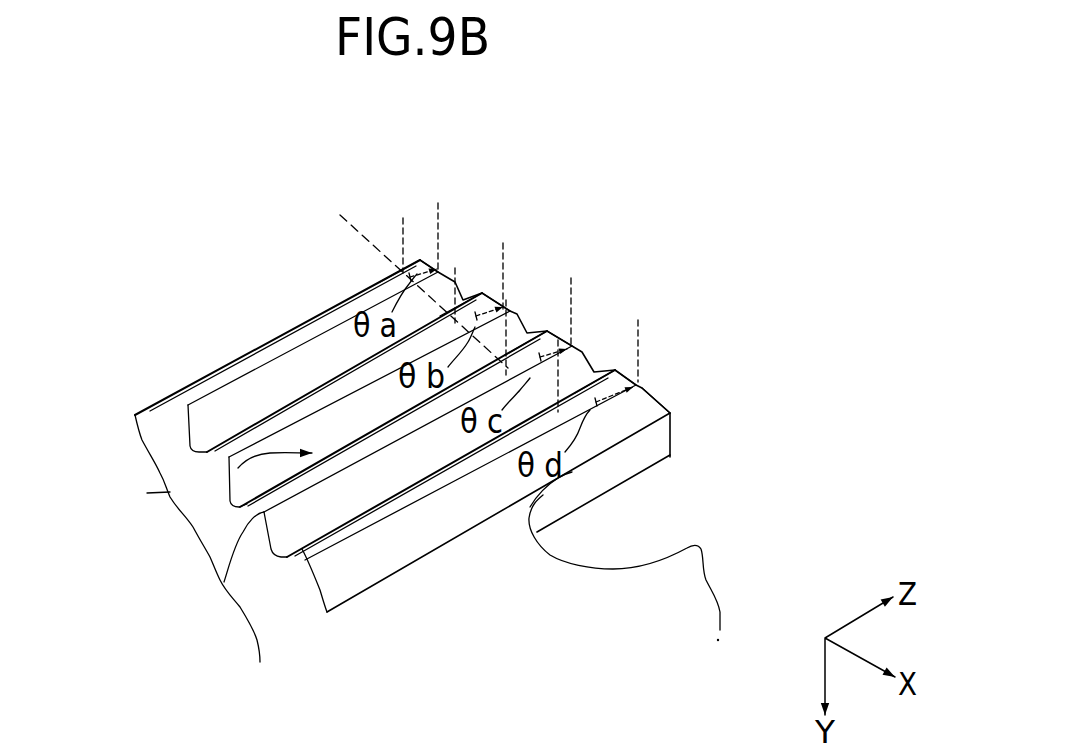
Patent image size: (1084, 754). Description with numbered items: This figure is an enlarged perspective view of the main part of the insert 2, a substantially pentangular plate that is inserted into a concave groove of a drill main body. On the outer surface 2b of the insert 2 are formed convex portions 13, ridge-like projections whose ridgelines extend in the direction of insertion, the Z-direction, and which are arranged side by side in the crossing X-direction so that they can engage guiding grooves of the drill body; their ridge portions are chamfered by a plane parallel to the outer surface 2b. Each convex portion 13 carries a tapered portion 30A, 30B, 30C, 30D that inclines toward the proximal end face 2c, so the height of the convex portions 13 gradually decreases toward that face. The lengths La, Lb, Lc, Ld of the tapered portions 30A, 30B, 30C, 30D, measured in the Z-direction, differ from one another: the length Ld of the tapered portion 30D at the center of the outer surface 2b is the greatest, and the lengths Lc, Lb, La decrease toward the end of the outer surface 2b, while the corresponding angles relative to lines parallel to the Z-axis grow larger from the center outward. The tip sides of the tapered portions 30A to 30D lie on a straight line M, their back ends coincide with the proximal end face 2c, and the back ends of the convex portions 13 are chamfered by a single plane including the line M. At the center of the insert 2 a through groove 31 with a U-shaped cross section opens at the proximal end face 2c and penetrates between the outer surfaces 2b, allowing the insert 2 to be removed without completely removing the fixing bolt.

The insert 2 is at (332, 293).
The outer surface 2b is at (243, 462).
The proximal end face 2c is at (600, 362).
The convex portion 13 is at (243, 436).
The tapered portion 30A is at (422, 260).
The tapered portion 30B is at (486, 293).
The tapered portion 30C is at (551, 337).
The tapered portion 30D is at (642, 388).
The through groove 31 is at (661, 511).
The straight line M is at (340, 215).
The length of tapered portion La is at (437, 203).
The length of tapered portion Lb is at (503, 243).
The length of tapered portion Lc is at (570, 280).
The length of tapered portion Ld is at (638, 318).